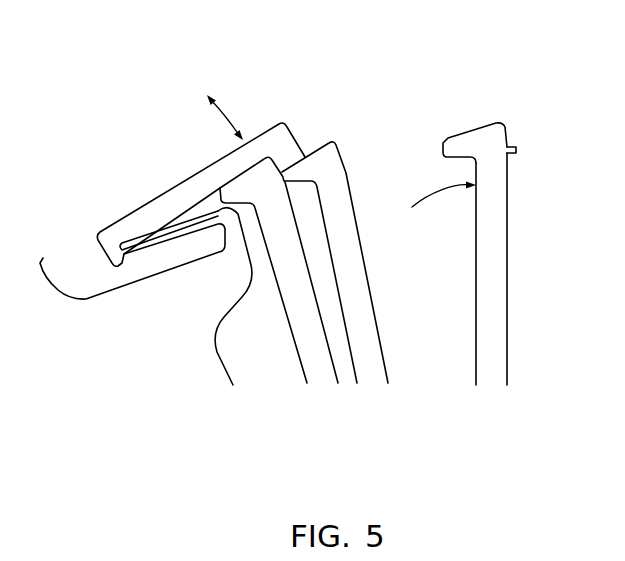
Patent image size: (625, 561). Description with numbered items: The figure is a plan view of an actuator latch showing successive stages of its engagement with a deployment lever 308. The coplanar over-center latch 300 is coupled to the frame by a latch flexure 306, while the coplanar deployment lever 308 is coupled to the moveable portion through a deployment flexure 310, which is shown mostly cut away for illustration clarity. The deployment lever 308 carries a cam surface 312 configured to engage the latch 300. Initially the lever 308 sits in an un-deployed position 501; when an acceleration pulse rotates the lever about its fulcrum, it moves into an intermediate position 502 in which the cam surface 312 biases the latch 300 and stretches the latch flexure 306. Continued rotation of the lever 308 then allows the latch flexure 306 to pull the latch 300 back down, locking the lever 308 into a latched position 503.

The latch 300 is at (183, 190).
The latch flexure 306 is at (155, 244).
The deployment lever 308 is at (508, 226).
The deployment flexure 310 is at (514, 146).
The cam surface 312 is at (473, 132).
The un-deployed position 501 is at (497, 242).
The intermediate position 502 is at (390, 250).
The latched position 503 is at (276, 340).